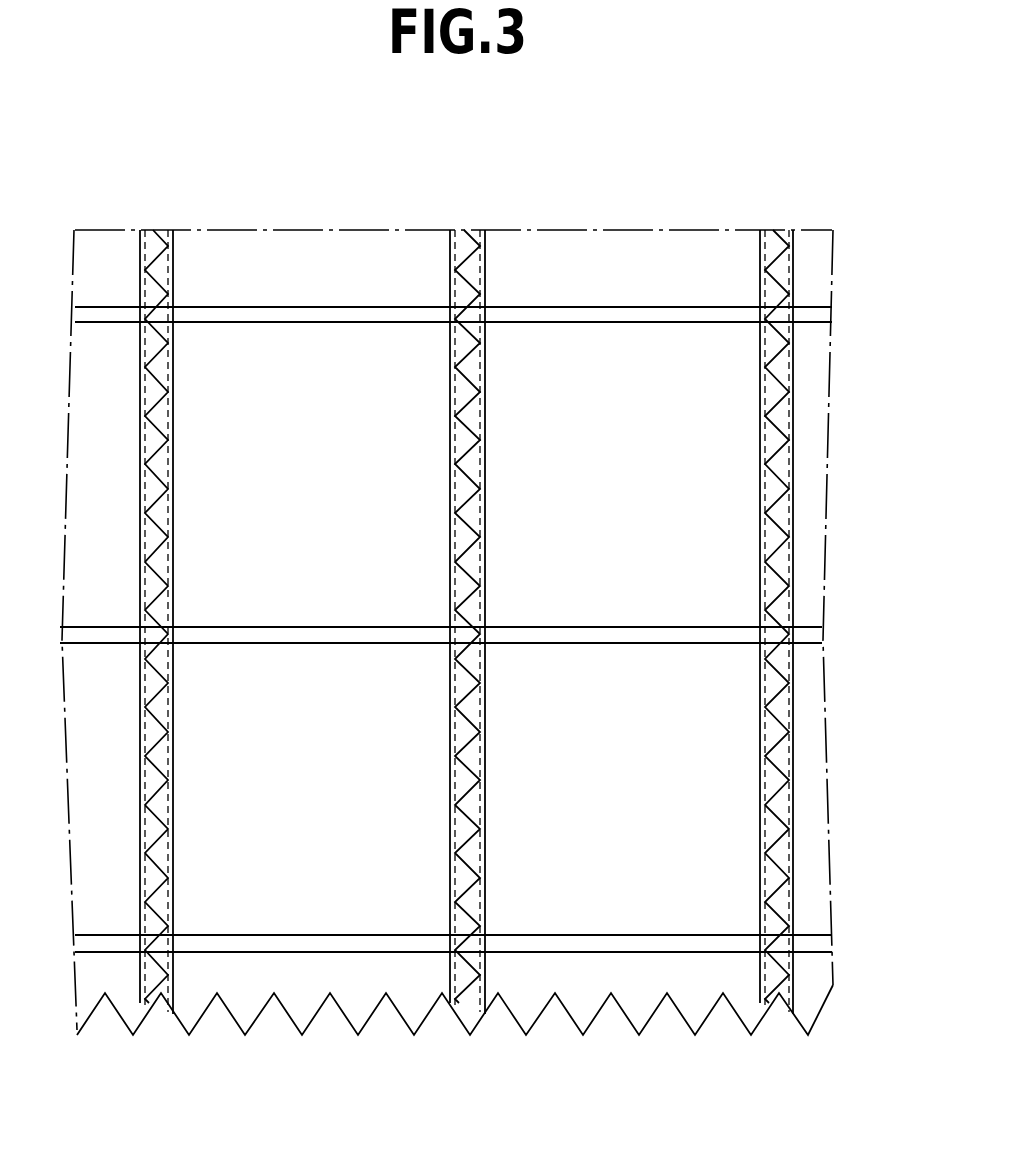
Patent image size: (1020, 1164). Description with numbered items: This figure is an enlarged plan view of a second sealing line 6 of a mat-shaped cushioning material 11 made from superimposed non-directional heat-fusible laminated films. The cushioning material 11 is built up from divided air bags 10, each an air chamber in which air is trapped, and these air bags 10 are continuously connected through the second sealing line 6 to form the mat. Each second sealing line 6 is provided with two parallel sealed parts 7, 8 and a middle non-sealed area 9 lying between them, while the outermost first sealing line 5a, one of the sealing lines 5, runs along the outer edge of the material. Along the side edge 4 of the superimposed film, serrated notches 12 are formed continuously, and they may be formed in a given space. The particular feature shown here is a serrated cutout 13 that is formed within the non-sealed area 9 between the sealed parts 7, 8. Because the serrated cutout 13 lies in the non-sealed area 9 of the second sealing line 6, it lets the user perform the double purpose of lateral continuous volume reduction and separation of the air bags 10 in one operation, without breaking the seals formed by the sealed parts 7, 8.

The side edge of the superimposed film 4 is at (643, 1003).
The sealing line 5 is at (294, 318).
The outermost first sealing line 5a is at (625, 945).
The second sealing line 6 is at (173, 371).
The sealed part 7 is at (140, 692).
The sealed part 8 is at (173, 565).
The middle non-sealed area 9 is at (160, 512).
The divided air bag 10 is at (345, 496).
The mat-shaped cushioning material 11 is at (625, 258).
The serrated notches 12 is at (316, 1014).
The serrated cutout 13 is at (155, 424).